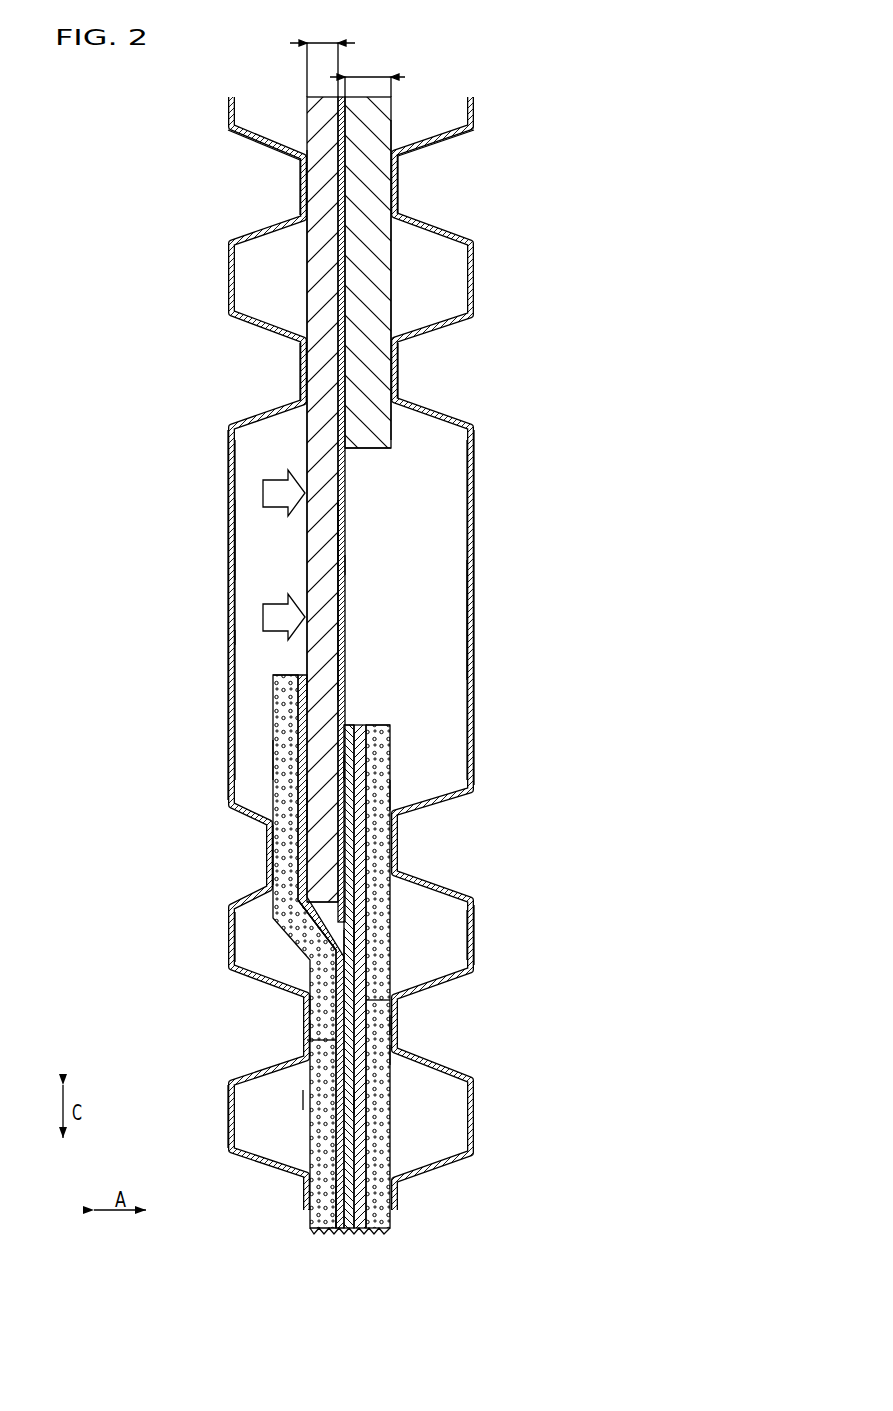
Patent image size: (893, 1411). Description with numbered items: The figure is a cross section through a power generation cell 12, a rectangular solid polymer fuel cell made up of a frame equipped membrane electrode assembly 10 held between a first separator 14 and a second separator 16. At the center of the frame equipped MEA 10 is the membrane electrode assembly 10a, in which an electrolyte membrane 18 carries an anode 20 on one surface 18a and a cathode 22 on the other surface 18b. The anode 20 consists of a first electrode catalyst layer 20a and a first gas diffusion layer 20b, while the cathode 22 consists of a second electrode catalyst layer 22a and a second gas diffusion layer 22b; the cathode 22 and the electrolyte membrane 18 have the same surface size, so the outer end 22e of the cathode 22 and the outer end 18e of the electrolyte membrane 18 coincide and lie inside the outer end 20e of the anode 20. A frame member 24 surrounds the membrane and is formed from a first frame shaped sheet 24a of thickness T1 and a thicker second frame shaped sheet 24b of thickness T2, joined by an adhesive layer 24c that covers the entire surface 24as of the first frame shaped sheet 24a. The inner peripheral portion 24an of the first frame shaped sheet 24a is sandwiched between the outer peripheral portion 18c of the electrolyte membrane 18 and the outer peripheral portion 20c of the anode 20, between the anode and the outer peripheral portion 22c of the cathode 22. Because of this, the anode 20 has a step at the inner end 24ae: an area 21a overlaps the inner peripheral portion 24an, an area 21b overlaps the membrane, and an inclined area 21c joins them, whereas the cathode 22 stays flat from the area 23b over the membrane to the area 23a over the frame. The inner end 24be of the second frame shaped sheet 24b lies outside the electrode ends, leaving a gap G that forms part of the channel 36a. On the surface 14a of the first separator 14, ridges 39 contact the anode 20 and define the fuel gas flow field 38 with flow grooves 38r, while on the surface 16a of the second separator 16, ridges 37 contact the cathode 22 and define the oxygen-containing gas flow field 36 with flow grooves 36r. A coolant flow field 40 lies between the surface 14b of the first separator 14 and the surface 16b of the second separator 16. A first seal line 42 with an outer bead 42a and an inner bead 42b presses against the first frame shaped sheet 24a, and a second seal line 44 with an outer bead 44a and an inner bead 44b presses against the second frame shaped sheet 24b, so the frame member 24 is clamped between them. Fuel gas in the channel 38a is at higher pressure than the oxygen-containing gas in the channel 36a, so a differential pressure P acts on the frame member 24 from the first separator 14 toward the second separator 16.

The frame equipped membrane electrode assembly 10 is at (259, 637).
The membrane electrode assembly 10a is at (304, 1097).
The power generation cell 12 is at (137, 92).
The first separator 14 is at (226, 724).
The surface of the first separator 14a is at (236, 1112).
The surface of the first separator 14b is at (229, 464).
The second separator 16 is at (476, 733).
The surface of the second separator 16a is at (460, 903).
The surface of the second separator 16b is at (475, 463).
The electrolyte membrane 18 is at (356, 918).
The one surface of the electrolyte membrane 18a is at (344, 945).
The surface of the electrolyte membrane 18b is at (362, 933).
The outer peripheral portion of the electrolyte membrane 18c is at (350, 767).
The outer end of the electrolyte membrane 18e is at (351, 724).
The anode 20 is at (174, 990).
The first electrode catalyst layer 20a is at (307, 1008).
The first gas diffusion layer 20b is at (307, 1025).
The outer peripheral portion of the anode 20c is at (284, 757).
The outer end of the anode 20e is at (284, 673).
The area overlapped with the inner peripheral portion of the first frame shaped shee 21a is at (282, 697).
The area overlapped with the electrolyte membrane 21b is at (310, 1197).
The inclined area 21c is at (330, 942).
The cathode 22 is at (527, 1012).
The second electrode catalyst layer 22a is at (398, 1027).
The second gas diffusion layer 22b is at (398, 1052).
The outer peripheral portion of the cathode 22c is at (406, 796).
The outer end of the cathode 22e is at (378, 725).
The area overlapped with the inner peripheral portion of the first frame shaped shee 23a is at (366, 862).
The area overlapped with the electrolyte membrane 23b is at (368, 1103).
The frame member 24 is at (395, 265).
The first frame shaped sheet 24a is at (316, 275).
The inner end of the first frame shaped sheet 24ae is at (296, 925).
The inner peripheral portion of the first frame shaped sheet 24an is at (318, 800).
The surface of the first frame shaped sheet 24as is at (340, 531).
The second frame shaped sheet 24b is at (380, 191).
The inner end of the second frame shaped sheet 24be is at (364, 450).
The adhesive layer 24c is at (345, 591).
The oxygen-containing gas flow field 36 is at (456, 795).
The channel 36a is at (445, 612).
The flow grooves 36r is at (462, 976).
The ridges 37 is at (390, 852).
The fuel gas flow field 38 is at (269, 795).
The channel 38a is at (254, 538).
The flow grooves 38r is at (236, 973).
The ridges 39 is at (276, 846).
The coolant flow field 40 is at (258, 847).
The first seal line 42 is at (252, 136).
The outer bead 42a is at (304, 172).
The inner bead 42b is at (304, 362).
The second seal line 44 is at (440, 136).
The outer bead 44a is at (395, 195).
The inner bead 44b is at (392, 383).
The gap G is at (357, 565).
The differential pressure P is at (284, 555).
The thickness of the first frame shaped sheet T1 is at (322, 59).
The thickness of the second frame shaped sheet T2 is at (367, 76).